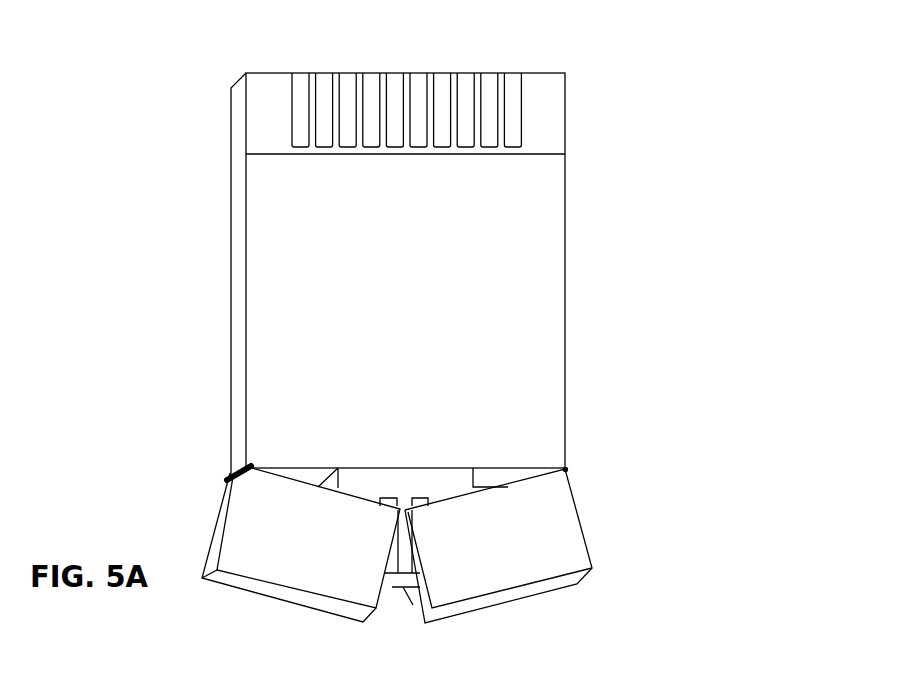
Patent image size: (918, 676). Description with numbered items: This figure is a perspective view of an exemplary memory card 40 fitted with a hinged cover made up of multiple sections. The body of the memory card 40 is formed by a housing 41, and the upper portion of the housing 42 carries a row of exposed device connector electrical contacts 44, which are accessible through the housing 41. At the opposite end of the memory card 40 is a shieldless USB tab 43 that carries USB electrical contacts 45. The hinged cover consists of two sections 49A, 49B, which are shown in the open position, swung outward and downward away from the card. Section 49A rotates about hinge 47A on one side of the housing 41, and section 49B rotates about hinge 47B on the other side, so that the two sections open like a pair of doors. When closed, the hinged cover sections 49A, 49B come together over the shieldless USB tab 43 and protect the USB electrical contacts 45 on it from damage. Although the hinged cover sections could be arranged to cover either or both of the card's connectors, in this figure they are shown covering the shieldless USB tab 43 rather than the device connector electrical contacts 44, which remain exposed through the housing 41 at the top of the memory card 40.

The memory card 40 is at (698, 84).
The housing 41 is at (239, 247).
The housing top portion 42 is at (558, 118).
The shieldless USB tab 43 is at (458, 475).
The device connector electrical contacts 44 is at (522, 72).
The USB electrical contacts 45 is at (458, 492).
The hinge 47A is at (229, 477).
The hinge 47B is at (567, 467).
The hinged cover section 49A is at (234, 512).
The hinged cover section 49B is at (578, 543).